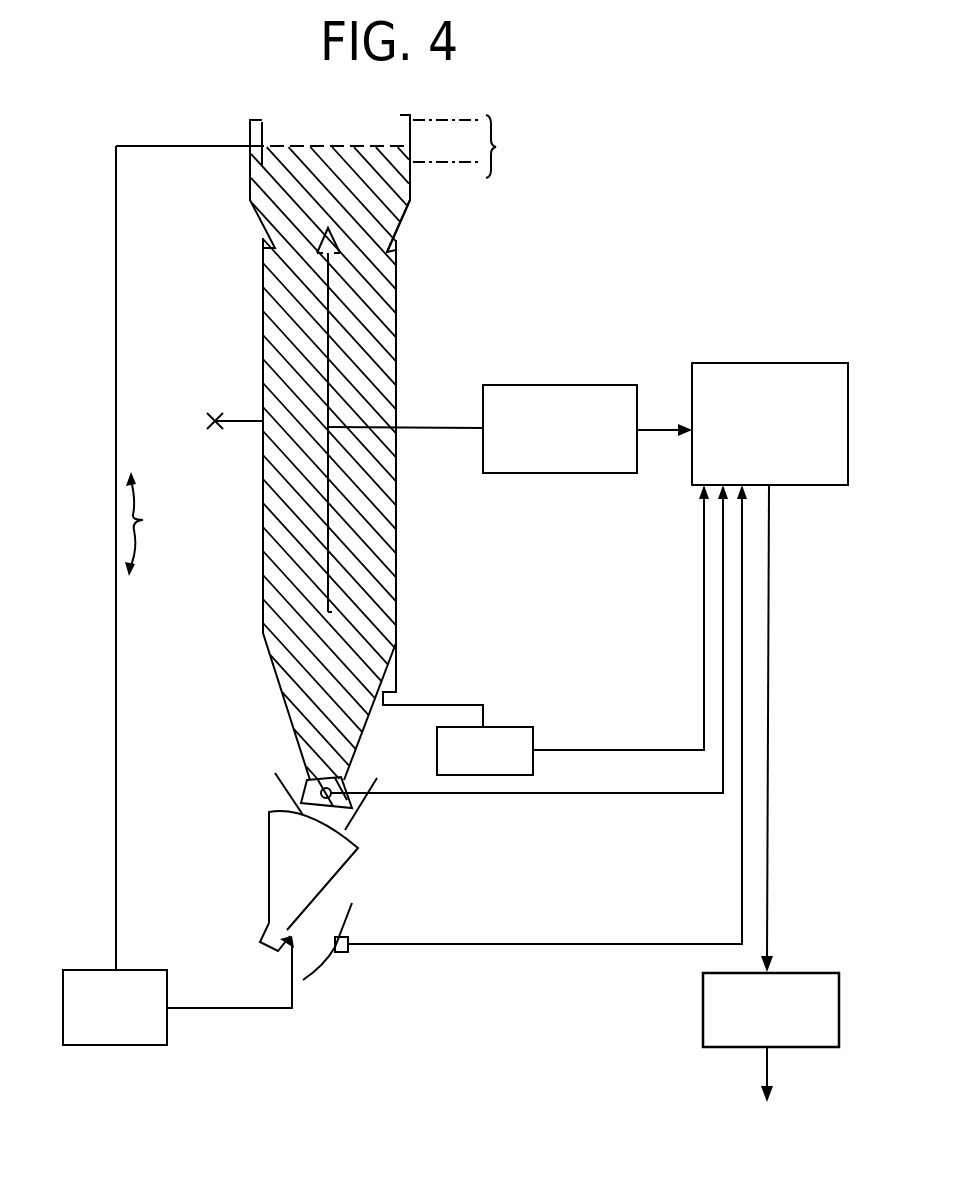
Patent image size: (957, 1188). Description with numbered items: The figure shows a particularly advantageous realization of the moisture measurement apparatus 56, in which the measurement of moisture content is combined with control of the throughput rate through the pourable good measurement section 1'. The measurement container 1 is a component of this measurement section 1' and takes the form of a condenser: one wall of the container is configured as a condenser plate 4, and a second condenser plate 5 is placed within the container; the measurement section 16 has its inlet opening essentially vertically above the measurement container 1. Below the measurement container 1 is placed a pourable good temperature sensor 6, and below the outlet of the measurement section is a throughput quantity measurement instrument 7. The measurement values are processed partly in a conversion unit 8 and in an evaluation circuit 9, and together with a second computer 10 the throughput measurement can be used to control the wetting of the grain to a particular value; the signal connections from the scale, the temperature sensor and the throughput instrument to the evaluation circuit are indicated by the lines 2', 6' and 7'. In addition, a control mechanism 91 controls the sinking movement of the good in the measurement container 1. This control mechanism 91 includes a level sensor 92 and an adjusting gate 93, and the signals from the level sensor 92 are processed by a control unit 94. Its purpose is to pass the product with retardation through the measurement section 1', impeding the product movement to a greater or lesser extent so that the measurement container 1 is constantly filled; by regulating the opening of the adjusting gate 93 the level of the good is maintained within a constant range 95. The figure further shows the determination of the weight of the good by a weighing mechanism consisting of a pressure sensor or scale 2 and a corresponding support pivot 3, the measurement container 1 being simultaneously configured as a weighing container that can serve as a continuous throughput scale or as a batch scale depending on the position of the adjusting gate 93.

The measurement container 1 is at (366, 447).
The pourable good measurement section 1' is at (404, 241).
The pressure sensor or scale 2 is at (494, 729).
The scale signal line 2' is at (621, 617).
The support pivot 3 is at (235, 420).
The condenser plate 4 is at (398, 305).
The second condenser plate 5 is at (330, 342).
The pourable good temperature sensor 6 is at (334, 802).
The valve signal line 6' is at (529, 639).
The throughput quantity measurement instrument 7 is at (330, 954).
The sensor signal line 7' is at (547, 714).
The conversion unit 8 is at (528, 473).
The evaluation circuit 9 is at (755, 363).
The second computer 10 is at (740, 1047).
The measurement section 16 is at (410, 237).
The moisture measurement apparatus 56 is at (418, 360).
The control mechanism 91 is at (183, 558).
The level sensor 92 is at (262, 158).
The adjusting gate 93 is at (268, 868).
The control unit 94 is at (107, 1045).
The constant range 95 is at (470, 146).